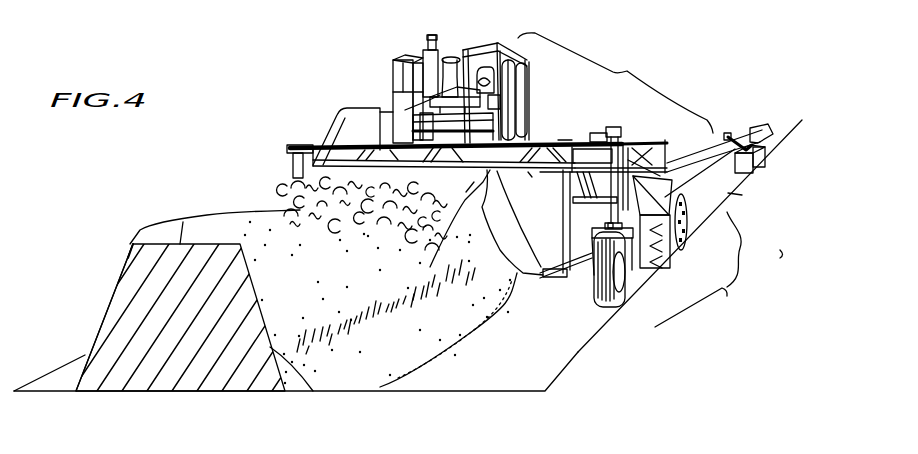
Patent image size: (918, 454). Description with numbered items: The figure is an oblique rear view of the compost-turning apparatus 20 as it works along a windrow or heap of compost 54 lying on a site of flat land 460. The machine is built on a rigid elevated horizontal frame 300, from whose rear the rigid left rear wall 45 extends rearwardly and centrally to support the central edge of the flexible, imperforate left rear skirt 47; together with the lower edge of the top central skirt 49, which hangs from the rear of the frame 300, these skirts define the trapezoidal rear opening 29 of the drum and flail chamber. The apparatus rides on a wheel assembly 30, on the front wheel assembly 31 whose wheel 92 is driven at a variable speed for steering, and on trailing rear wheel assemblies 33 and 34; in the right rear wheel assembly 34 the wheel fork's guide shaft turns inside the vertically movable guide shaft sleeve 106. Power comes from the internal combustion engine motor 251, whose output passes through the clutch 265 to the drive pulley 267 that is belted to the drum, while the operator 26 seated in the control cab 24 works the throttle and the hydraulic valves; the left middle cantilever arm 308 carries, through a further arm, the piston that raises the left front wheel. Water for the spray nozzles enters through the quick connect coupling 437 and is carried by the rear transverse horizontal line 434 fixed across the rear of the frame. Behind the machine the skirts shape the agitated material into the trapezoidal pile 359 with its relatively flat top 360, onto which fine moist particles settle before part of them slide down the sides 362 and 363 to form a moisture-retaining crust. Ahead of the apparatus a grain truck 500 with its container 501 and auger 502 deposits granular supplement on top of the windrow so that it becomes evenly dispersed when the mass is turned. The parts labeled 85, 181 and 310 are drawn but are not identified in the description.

The apparatus 20 is at (615, 83).
The control cab 24 is at (526, 62).
The operator 26 is at (487, 82).
The trapezoidal rear opening 29 is at (433, 266).
The wheel assembly 30 is at (698, 307).
The wheel assembly 31 is at (755, 249).
The rear wheel assembly 33 is at (628, 278).
The right rear wheel assembly 34 is at (377, 143).
The left rear wall 45 is at (546, 219).
The left rear skirt 47 is at (506, 218).
The top central skirt 49 is at (465, 192).
The windrow of compost 54 is at (684, 184).
The cutting disc 85 is at (687, 227).
The wheel 92 is at (670, 260).
The right guide shaft sleeve 106 is at (293, 166).
The wheel support post 181 is at (620, 133).
The internal combustion engine motor 251 is at (468, 80).
The clutch 265 is at (501, 101).
The drive pulley 267 is at (600, 132).
The elevated horizontal frame 300 is at (313, 146).
The left middle cantilever arm 308 is at (667, 145).
The frame link 310 is at (561, 143).
The pile 359 is at (190, 311).
The flat top 360 is at (185, 222).
The side of the mass 362 is at (113, 300).
The side of the mass 363 is at (303, 382).
The rear transverse horizontal line 434 is at (525, 183).
The quick connect coupling 437 is at (568, 275).
The site of flat land 460 is at (753, 195).
The grain truck 500 is at (710, 231).
The container 501 is at (766, 168).
The auger 502 is at (730, 135).